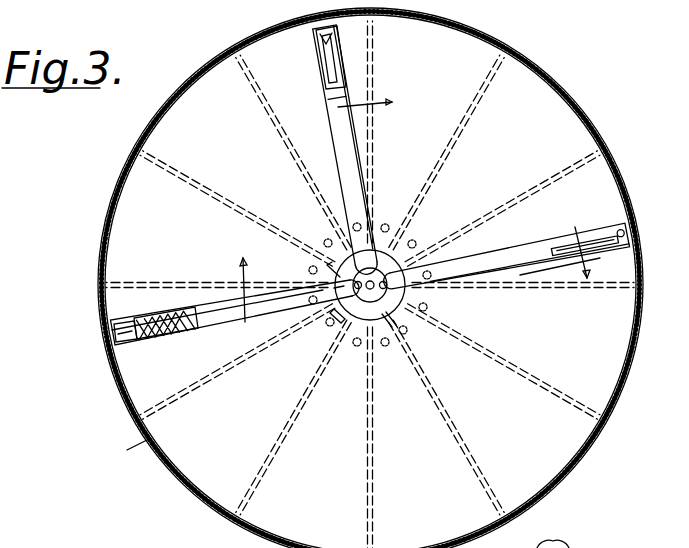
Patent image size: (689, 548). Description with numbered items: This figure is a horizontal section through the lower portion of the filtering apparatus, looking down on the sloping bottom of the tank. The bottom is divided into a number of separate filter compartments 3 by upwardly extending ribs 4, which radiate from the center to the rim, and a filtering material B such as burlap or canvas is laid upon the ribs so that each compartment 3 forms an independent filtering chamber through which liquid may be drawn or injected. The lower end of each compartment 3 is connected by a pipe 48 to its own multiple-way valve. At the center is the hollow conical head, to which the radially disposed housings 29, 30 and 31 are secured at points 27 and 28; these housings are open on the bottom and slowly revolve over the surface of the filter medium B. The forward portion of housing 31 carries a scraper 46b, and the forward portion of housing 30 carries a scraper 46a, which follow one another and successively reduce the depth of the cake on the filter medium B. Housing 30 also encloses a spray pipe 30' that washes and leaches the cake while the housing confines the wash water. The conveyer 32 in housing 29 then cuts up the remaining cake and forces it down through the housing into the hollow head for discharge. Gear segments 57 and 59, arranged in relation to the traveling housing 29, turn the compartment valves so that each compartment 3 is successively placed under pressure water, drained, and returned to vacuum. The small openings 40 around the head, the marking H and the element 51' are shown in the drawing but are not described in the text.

The filter compartment 3 is at (130, 207).
The upwardly extending rib 4 is at (163, 155).
The securing point 28 is at (372, 232).
The locking holes 40 is at (329, 240).
The housing 30 is at (365, 149).
The spray pipe 30' is at (346, 57).
The scraper 46a is at (358, 140).
The housing 31 is at (522, 235).
The slider on right arm 51' is at (587, 238).
The scraper 46b is at (538, 268).
The housing 29 is at (260, 313).
The conveyer 32 is at (193, 312).
The gear segment 57 is at (327, 266).
The securing point 27 is at (340, 285).
The gear segment 59 is at (333, 318).
The pipe 48 is at (572, 547).
The rim reference H is at (116, 453).
The filtering material B is at (183, 237).